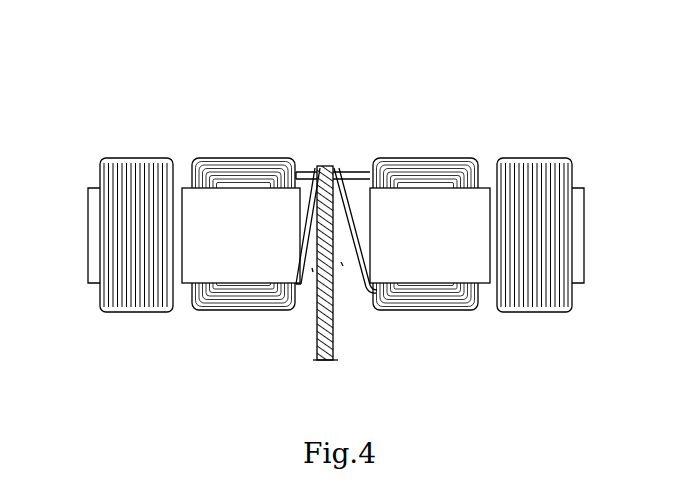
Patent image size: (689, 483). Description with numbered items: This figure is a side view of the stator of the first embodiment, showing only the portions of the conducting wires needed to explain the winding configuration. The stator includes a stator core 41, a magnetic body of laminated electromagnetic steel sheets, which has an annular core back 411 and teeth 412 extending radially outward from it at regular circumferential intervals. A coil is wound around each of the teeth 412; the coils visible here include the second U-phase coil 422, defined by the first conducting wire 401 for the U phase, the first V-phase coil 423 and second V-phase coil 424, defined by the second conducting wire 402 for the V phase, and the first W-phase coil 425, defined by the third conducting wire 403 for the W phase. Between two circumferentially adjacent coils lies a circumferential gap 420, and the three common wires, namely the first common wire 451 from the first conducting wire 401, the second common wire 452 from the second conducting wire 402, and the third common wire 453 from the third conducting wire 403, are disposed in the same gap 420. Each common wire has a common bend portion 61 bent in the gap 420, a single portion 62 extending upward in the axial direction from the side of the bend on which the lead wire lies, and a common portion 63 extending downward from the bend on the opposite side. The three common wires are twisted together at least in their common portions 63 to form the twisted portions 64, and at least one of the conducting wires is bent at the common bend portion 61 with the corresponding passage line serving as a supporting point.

The first conducting wire 401 is at (478, 67).
The second conducting wire 402 is at (75, 80).
The third conducting wire 403 is at (240, 61).
The stator core 41 is at (82, 265).
The core back 411 is at (312, 270).
The teeth 412 is at (237, 272).
The circumferential gap 420 is at (343, 266).
The second U-phase coil 422 is at (449, 158).
The first V-phase coil 423 is at (112, 160).
The second V-phase coil 424 is at (560, 158).
The first W-phase coil 425 is at (203, 160).
The first common wire 451 is at (436, 92).
The second common wire 452 is at (366, 290).
The third common wire 453 is at (310, 102).
The common bend portion 61 is at (300, 222).
The single portion 62 is at (350, 220).
The common portion 63 is at (303, 176).
The twisted portion 64 is at (338, 345).